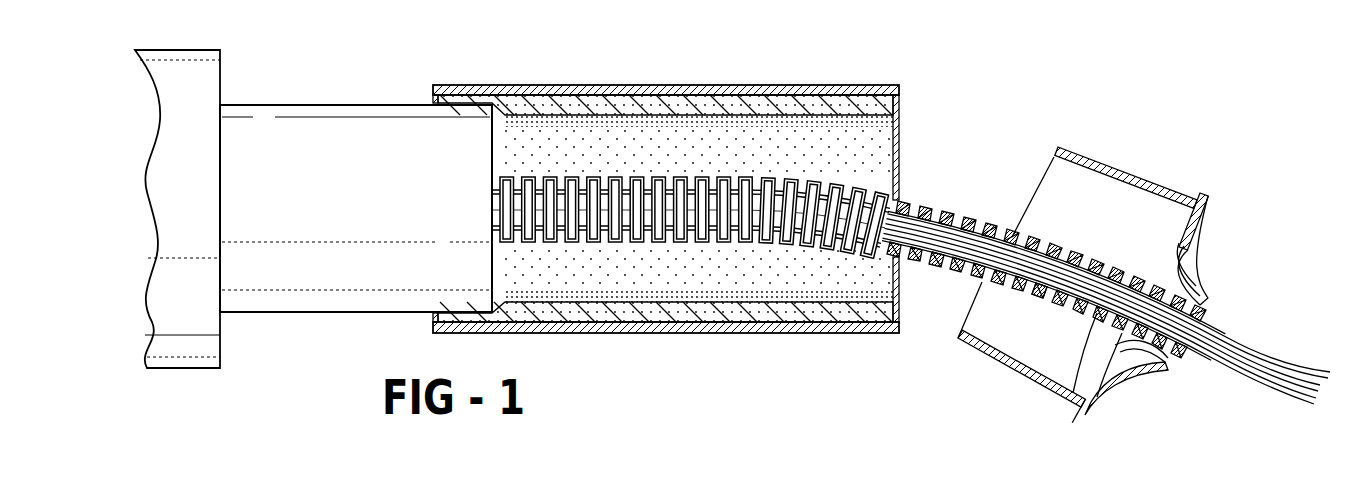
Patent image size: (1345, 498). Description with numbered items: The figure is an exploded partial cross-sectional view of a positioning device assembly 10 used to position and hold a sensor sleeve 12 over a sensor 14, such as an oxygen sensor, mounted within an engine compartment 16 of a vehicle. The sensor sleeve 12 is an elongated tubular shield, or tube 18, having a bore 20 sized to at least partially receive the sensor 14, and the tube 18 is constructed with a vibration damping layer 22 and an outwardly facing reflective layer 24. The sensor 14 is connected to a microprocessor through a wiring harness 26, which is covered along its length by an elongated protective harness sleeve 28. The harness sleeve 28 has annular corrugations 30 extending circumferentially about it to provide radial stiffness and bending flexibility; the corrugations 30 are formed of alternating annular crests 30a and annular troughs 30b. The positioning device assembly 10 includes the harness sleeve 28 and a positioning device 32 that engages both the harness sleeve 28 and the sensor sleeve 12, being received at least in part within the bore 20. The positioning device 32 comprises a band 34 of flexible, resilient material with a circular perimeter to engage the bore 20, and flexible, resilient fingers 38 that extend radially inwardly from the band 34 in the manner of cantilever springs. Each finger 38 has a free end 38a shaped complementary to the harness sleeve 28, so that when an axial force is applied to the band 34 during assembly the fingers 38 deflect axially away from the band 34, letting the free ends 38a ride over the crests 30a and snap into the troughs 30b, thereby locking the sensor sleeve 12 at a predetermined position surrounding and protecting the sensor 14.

The positioning device assembly 10 is at (1109, 262).
The sensor sleeve 12 is at (725, 208).
The sensor 14 is at (312, 106).
The engine compartment 16 is at (957, 122).
The tube 18 is at (620, 333).
The bore 20 is at (897, 282).
The vibration damping layer 22 is at (714, 96).
The reflective layer 24 is at (862, 85).
The wiring harness 26 is at (1290, 385).
The harness sleeve 28 is at (805, 192).
The annular corrugations 30 is at (955, 207).
The annular crests 30a is at (1058, 302).
The annular troughs 30b is at (1074, 404).
The positioning device 32 is at (1119, 273).
The band 34 is at (1095, 163).
The fingers 38 is at (1130, 372).
The free end 38a is at (1163, 367).